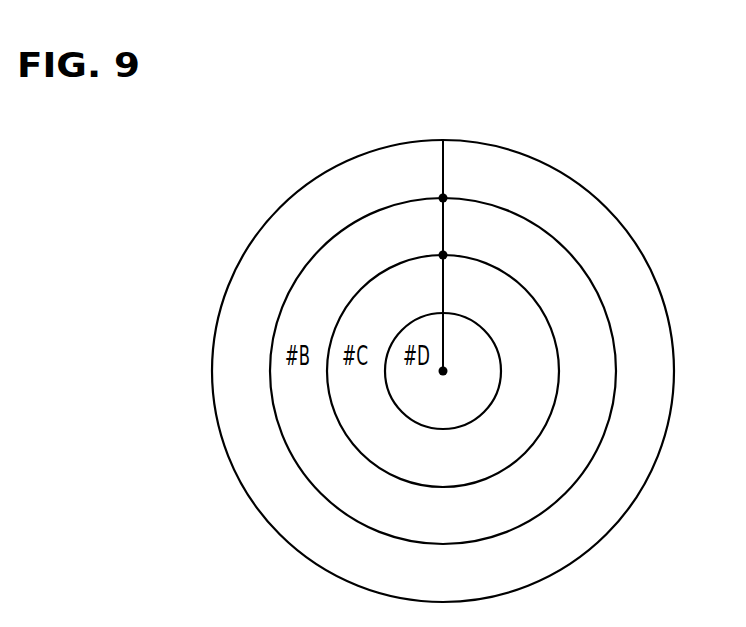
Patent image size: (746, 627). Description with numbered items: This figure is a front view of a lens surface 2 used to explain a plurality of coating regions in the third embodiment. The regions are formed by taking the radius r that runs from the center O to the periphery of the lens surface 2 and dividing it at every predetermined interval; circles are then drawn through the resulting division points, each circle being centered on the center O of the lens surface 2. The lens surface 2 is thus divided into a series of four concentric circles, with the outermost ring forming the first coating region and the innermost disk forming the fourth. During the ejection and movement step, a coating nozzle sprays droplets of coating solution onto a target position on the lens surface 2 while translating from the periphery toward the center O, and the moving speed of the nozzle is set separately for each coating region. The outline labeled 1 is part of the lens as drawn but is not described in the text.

The outer circle / tire outline 1 is at (252, 238).
The lens surface 2 is at (257, 298).
The radius r is at (443, 229).
The center o is at (445, 373).